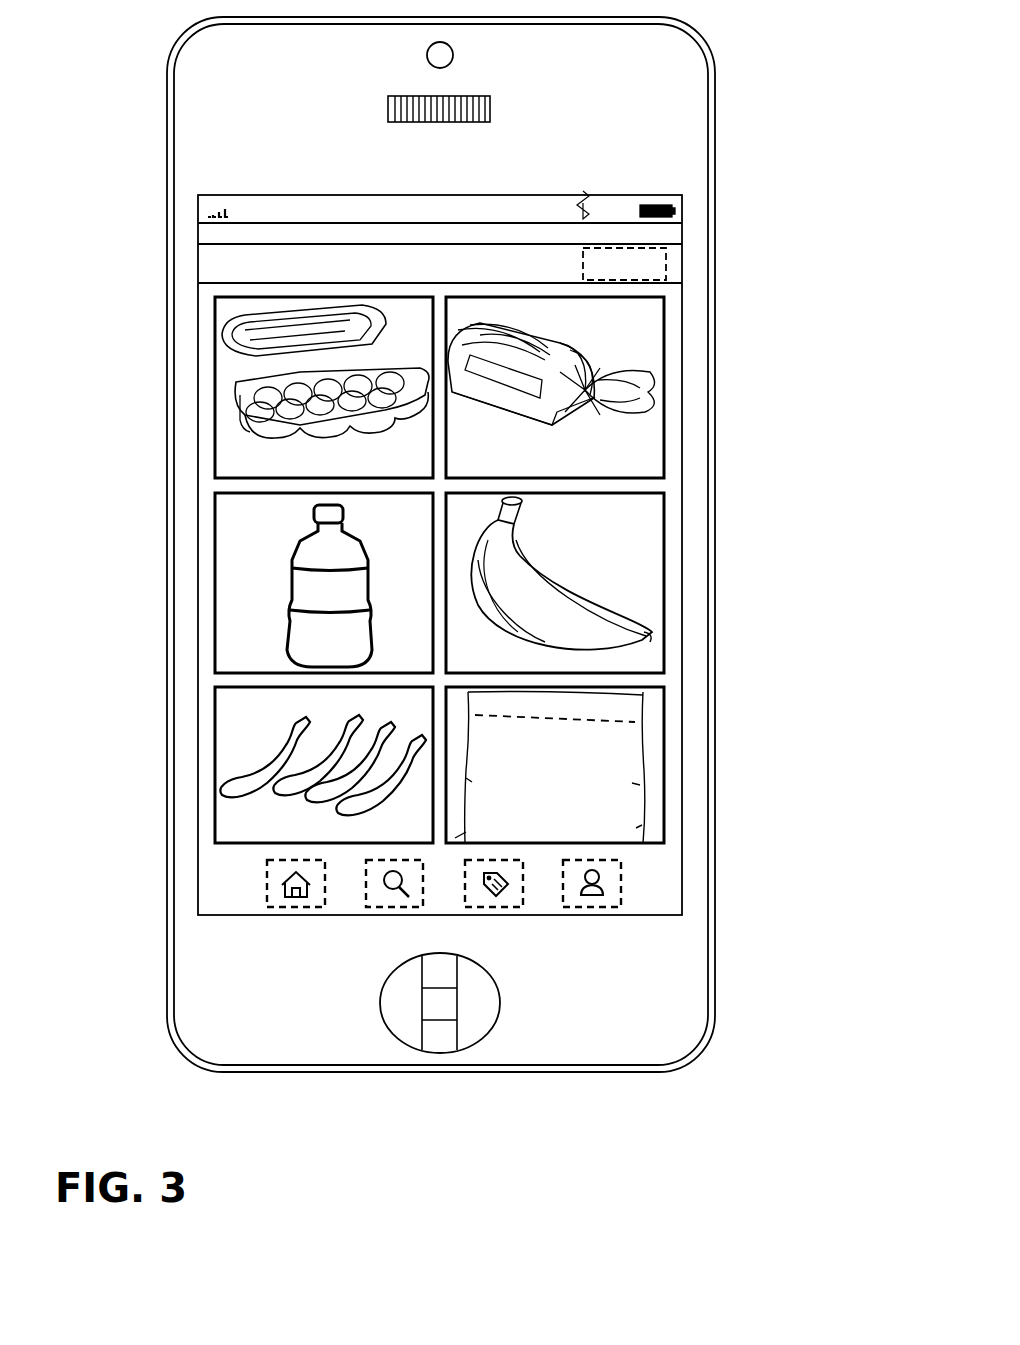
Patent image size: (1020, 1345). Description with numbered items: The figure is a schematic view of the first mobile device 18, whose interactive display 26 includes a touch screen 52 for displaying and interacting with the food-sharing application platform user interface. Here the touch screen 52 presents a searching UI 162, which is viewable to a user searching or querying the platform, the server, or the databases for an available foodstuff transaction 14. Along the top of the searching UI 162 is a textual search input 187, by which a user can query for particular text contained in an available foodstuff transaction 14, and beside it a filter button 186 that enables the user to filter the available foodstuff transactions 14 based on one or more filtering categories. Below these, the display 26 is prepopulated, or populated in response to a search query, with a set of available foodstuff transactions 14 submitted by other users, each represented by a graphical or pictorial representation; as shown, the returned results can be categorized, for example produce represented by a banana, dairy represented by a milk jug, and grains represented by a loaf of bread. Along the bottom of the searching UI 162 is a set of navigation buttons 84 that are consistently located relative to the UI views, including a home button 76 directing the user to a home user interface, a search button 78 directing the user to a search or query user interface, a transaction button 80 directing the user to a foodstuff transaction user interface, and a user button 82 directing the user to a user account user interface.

The first mobile device 18 is at (163, 61).
The touch screen 52 is at (683, 343).
The textual search input 187 is at (196, 264).
The filter button 186 is at (668, 264).
The foodstuff transaction 14 is at (440, 606).
The searching UI 162 is at (668, 553).
The interactive display 26 is at (668, 838).
The home button 76 is at (290, 909).
The search button 78 is at (398, 909).
The transaction button 80 is at (476, 909).
The user button 82 is at (588, 909).
The set of navigation buttons 84 is at (456, 1016).